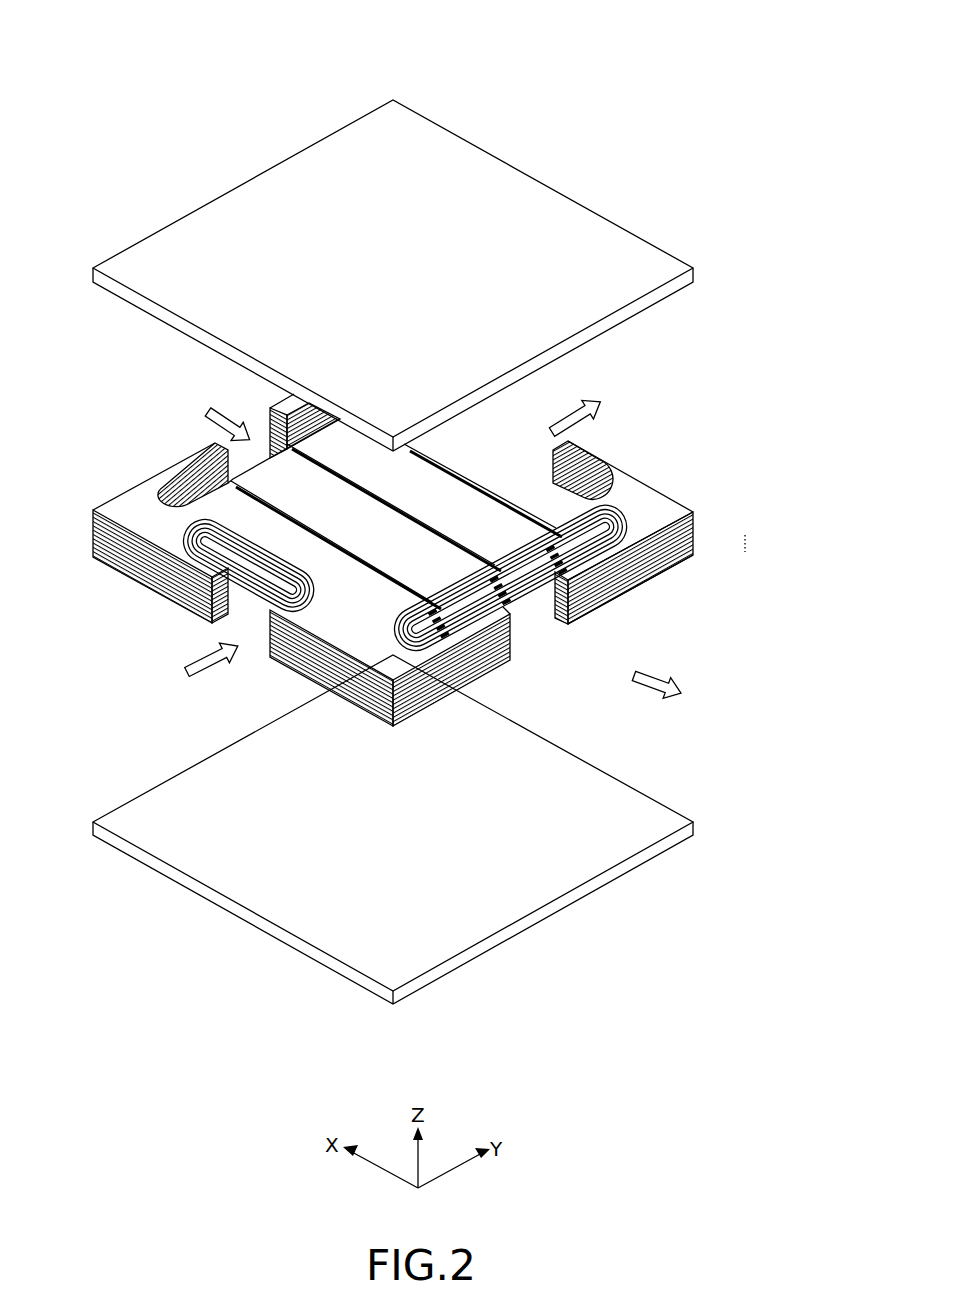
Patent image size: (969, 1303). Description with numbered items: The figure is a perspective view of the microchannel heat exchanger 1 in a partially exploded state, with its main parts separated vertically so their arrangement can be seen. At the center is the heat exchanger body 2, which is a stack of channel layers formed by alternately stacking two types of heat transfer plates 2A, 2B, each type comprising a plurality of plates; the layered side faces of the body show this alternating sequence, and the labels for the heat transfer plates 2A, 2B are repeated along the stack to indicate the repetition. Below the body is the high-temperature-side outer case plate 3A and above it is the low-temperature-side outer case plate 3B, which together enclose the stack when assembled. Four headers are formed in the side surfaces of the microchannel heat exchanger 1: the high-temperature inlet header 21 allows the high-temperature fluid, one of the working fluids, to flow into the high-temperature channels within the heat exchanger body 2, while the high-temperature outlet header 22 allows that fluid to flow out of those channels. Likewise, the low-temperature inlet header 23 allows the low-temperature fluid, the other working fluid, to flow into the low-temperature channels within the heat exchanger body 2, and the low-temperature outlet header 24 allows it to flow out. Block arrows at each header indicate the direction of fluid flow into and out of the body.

The microchannel heat exchanger 1 is at (410, 31).
The heat exchanger body 2 is at (429, 560).
The heat transfer plate 2A is at (686, 494).
The heat transfer plate 2B is at (690, 513).
The high-temperature-side outer case plate 3A is at (690, 822).
The low-temperature-side outer case plate 3B is at (690, 270).
The high-temperature inlet header 21 is at (229, 621).
The high-temperature outlet header 22 is at (556, 448).
The low-temperature inlet header 23 is at (216, 442).
The low-temperature outlet header 24 is at (540, 627).